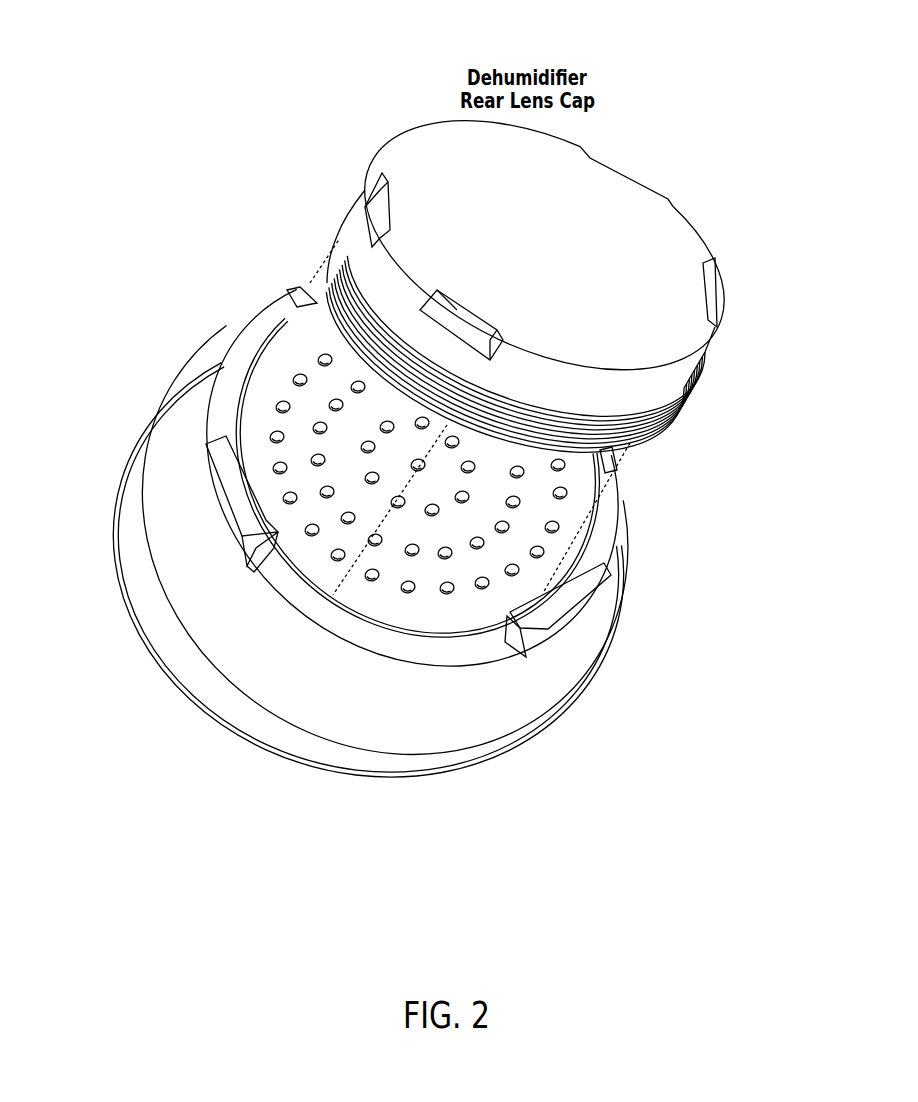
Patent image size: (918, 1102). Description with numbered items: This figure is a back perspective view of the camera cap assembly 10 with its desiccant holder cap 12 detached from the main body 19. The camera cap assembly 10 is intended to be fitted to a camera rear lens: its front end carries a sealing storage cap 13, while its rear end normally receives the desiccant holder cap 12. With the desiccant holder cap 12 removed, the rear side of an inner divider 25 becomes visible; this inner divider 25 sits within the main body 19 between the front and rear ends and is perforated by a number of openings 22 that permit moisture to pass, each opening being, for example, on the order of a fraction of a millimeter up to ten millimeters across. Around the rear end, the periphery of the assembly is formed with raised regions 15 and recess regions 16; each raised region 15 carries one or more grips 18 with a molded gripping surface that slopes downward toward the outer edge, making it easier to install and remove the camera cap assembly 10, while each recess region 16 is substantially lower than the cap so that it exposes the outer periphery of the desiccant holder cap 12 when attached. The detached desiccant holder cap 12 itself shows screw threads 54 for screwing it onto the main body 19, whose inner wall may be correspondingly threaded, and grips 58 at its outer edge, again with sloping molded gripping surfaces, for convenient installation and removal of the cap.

The camera cap assembly 10 is at (180, 461).
The desiccant holder cap 12 is at (505, 253).
The sealing storage cap 13 is at (268, 748).
The raised region 15 is at (607, 517).
The recess region 16 is at (307, 597).
The grip 18 is at (578, 592).
The main body 19 is at (468, 703).
The openings 22 is at (439, 589).
The inner divider 25 is at (263, 391).
The screw threads 54 is at (335, 236).
The grips 58 is at (453, 323).